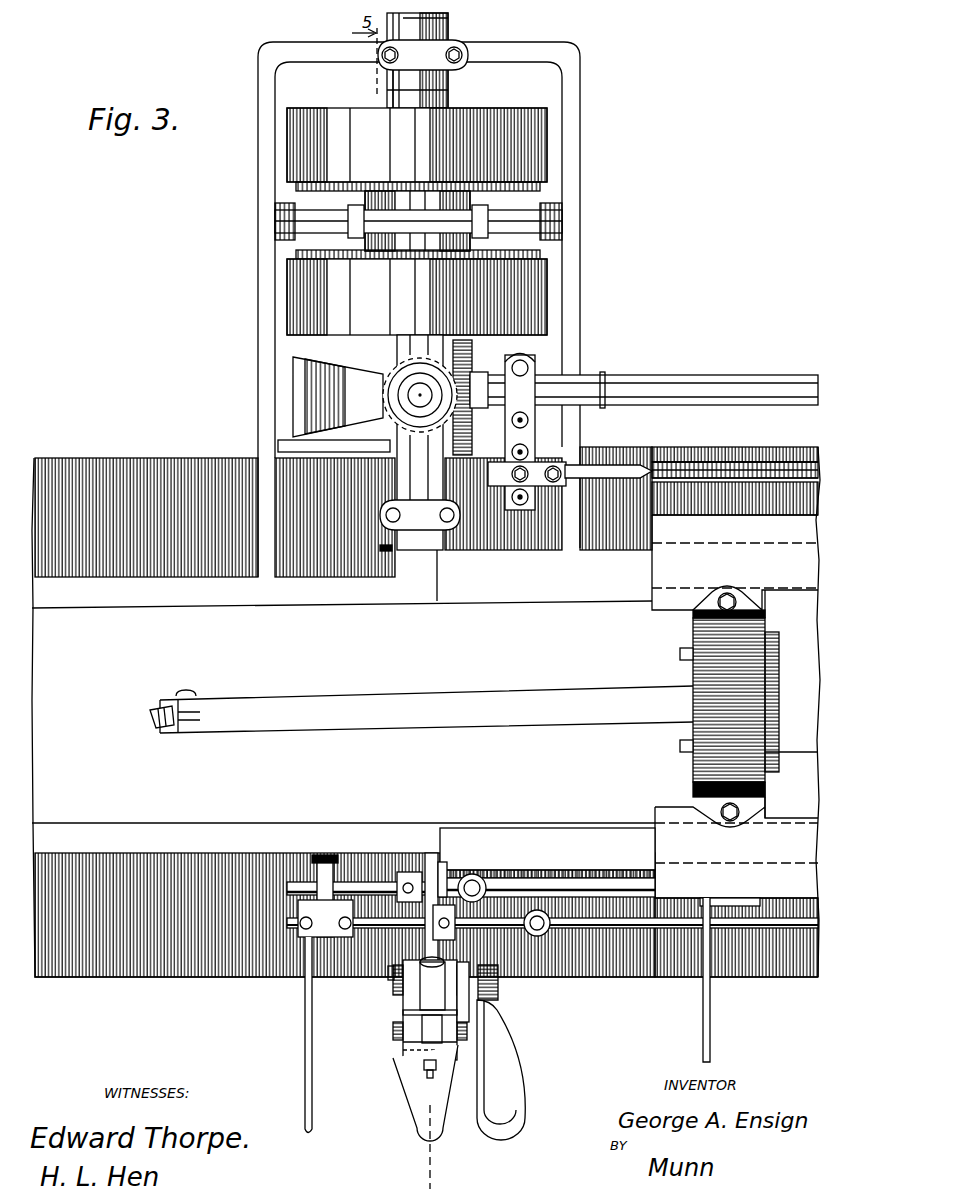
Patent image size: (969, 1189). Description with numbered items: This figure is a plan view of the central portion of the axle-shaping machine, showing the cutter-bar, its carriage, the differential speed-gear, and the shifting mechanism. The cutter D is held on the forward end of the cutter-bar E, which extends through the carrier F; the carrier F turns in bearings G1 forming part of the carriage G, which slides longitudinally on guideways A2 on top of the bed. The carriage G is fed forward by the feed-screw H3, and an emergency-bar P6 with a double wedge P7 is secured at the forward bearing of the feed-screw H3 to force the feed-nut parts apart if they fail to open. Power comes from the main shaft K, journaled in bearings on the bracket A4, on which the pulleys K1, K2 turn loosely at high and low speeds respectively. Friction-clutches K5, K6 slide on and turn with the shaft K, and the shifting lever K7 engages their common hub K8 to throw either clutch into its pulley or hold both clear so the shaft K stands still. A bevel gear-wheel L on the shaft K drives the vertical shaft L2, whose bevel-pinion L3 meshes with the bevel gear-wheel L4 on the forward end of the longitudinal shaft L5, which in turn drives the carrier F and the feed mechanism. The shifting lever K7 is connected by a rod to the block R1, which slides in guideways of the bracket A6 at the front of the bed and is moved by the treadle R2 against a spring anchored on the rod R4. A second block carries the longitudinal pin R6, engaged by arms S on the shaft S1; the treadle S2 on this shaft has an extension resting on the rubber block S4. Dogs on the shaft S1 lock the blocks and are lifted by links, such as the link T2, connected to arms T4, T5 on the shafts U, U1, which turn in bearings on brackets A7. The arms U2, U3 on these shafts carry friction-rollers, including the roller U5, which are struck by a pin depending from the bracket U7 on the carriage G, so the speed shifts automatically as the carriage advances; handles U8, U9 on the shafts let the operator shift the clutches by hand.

The guideways A2 is at (610, 578).
The bracket A4 is at (258, 348).
The bracket A6 is at (408, 1022).
The brackets A7 is at (318, 880).
The main shaft K is at (442, 14).
The pulley K1 is at (464, 118).
The pulley K2 is at (548, 301).
The friction-clutch K5 is at (540, 189).
The friction-clutch K6 is at (540, 255).
The shifting lever K7 is at (356, 240).
The hub K8 is at (411, 228).
The bevel gear-wheel L is at (386, 434).
The vertically-disposed shaft L2 is at (412, 385).
The bevel-pinion L3 is at (386, 388).
The bevel gear-wheel L4 is at (470, 366).
The shaft L5 is at (655, 388).
The emergency-bar P6 is at (595, 468).
The double wedge P7 is at (645, 466).
The feed-screw H3 is at (718, 466).
The carriage G is at (735, 706).
The bearings G1 is at (729, 703).
The carrier F is at (791, 704).
The cutter-bar E is at (563, 700).
The cutter D is at (152, 727).
The link T2 is at (428, 855).
The arm T4 is at (440, 870).
The arm T5 is at (400, 872).
The shaft U is at (610, 930).
The shaft U1 is at (575, 885).
The arm U2 is at (540, 938).
The arm U3 is at (474, 878).
The friction-roller U5 is at (500, 880).
The bracket U7 is at (740, 898).
The handle U8 is at (305, 1046).
The handle U9 is at (710, 1012).
The arms S is at (400, 985).
The shaft S1 is at (410, 1005).
The treadle S2 is at (501, 1070).
The rubber block S4 is at (520, 882).
The block R1 is at (418, 1040).
The treadle R2 is at (408, 1092).
The rod R4 is at (432, 1072).
The longitudinal pin R6 is at (393, 972).